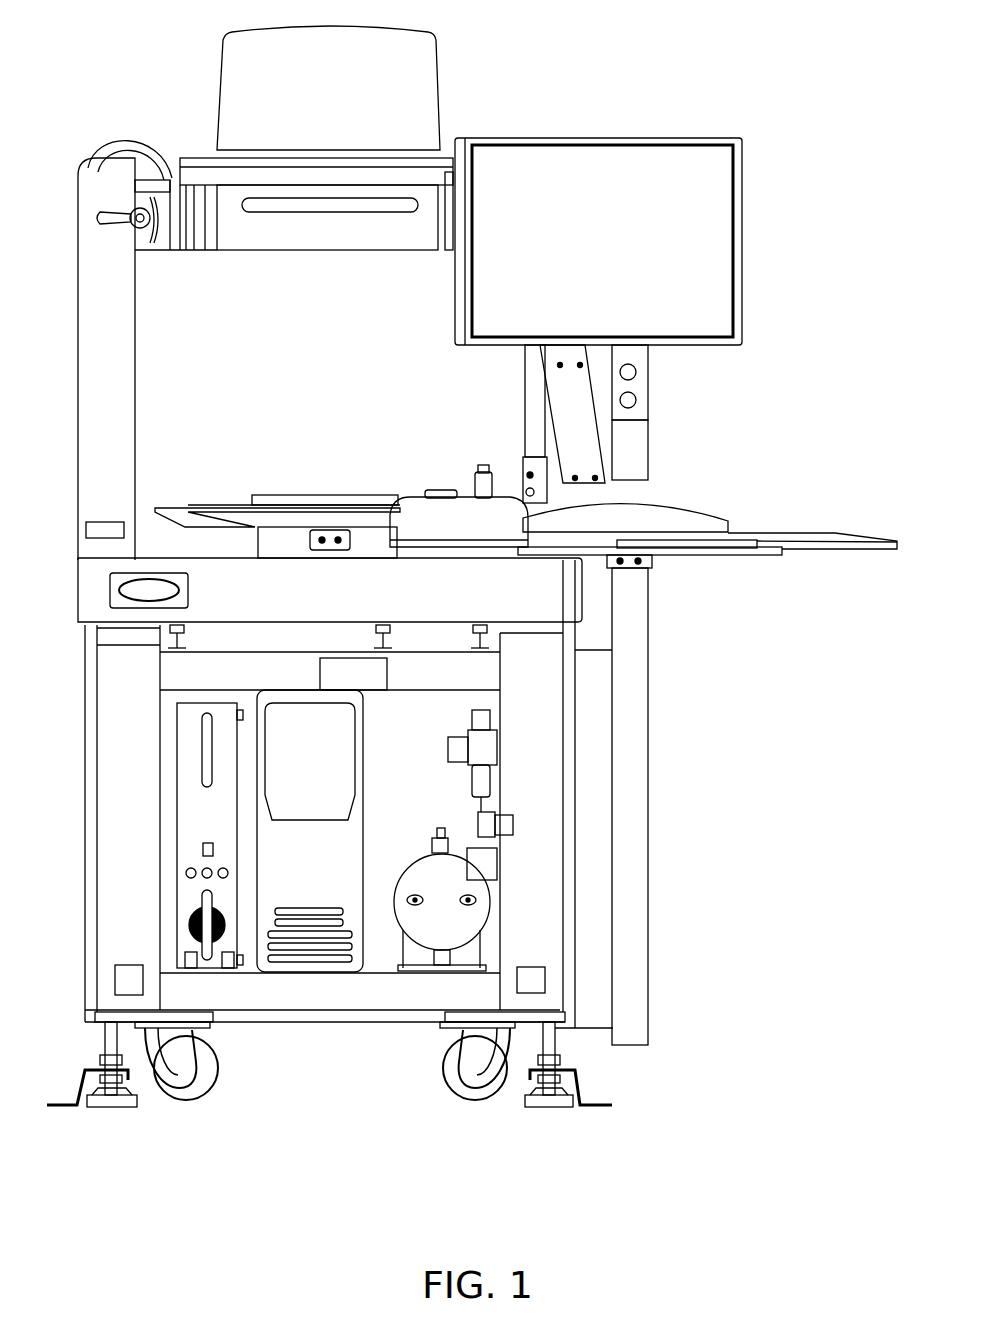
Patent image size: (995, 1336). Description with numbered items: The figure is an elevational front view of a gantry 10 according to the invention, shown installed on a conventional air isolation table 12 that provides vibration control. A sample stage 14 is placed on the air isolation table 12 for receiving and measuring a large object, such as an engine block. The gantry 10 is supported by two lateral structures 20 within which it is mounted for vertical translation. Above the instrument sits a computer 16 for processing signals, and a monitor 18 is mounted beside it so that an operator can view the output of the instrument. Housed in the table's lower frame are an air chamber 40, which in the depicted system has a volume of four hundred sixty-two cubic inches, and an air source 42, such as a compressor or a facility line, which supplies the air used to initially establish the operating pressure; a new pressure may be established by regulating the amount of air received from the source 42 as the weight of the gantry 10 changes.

The gantry 10 is at (303, 262).
The air isolation table 12 is at (553, 590).
The sample stage 14 is at (330, 497).
The computer 16 is at (408, 57).
The monitor 18 is at (620, 163).
The lateral structures 20 is at (113, 413).
The air chamber 40 is at (413, 856).
The air source 42 is at (470, 845).